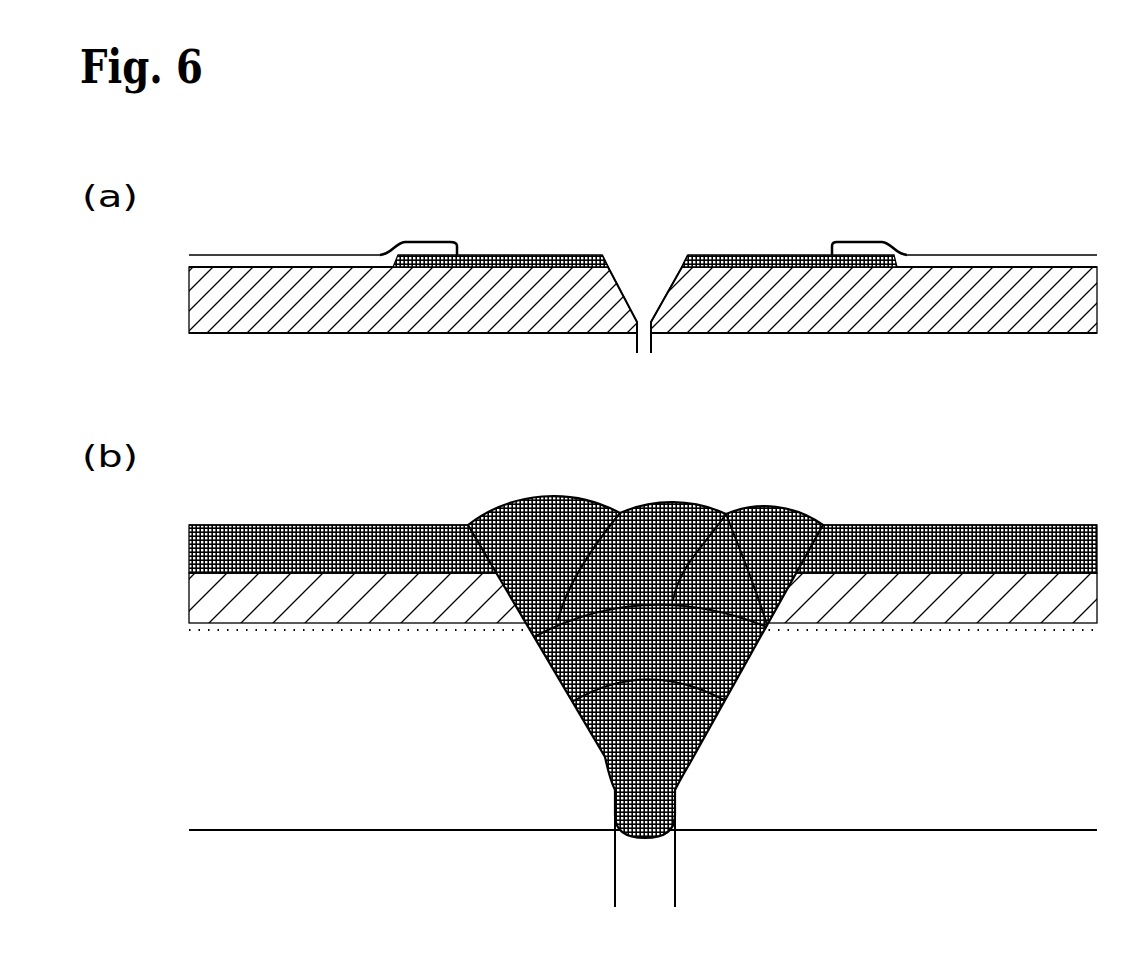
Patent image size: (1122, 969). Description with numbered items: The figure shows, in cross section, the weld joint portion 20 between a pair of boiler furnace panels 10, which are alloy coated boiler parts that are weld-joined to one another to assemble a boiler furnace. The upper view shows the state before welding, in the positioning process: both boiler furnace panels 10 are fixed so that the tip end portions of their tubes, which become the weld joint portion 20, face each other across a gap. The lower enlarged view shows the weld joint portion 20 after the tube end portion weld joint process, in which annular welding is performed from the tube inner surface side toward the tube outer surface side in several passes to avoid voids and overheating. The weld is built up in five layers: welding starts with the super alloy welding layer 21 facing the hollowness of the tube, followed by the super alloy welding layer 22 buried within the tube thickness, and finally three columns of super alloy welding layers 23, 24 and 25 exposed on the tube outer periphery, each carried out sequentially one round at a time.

The boiler furnace panel 10 is at (357, 220).
The weld joint portion 20 is at (647, 256).
The super alloy welding layer 21 is at (688, 765).
The super alloy welding layer 22 is at (742, 677).
The super alloy welding layer 23 is at (777, 615).
The super alloy welding layer 24 is at (660, 502).
The super alloy welding layer 25 is at (526, 502).